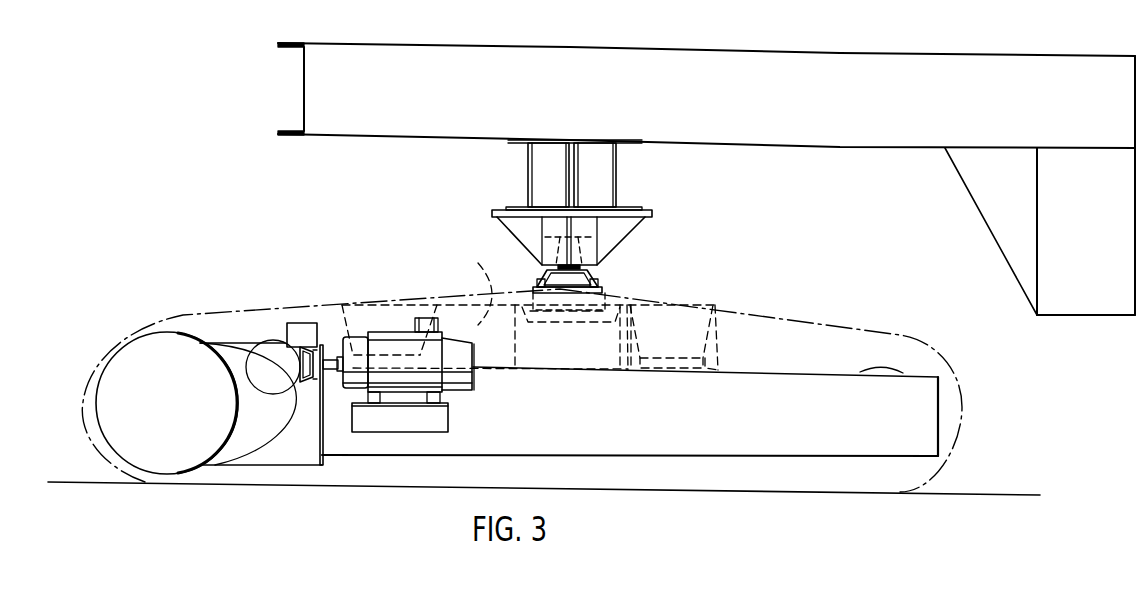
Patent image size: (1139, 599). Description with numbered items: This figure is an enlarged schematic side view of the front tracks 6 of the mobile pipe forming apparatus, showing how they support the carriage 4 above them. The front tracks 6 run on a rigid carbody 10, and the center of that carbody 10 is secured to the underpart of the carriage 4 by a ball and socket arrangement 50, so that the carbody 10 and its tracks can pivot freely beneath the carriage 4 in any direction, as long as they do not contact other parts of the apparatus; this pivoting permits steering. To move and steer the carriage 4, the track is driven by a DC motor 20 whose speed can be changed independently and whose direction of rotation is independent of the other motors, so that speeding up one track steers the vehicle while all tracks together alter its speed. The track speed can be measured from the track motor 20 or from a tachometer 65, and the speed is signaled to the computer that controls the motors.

The carriage 4 is at (405, 44).
The front tracks 6 is at (183, 317).
The rigid carbody 10 is at (495, 317).
The DC motor 20 is at (387, 340).
The ball and socket arrangement 50 is at (608, 269).
The tachometer 65 is at (305, 323).